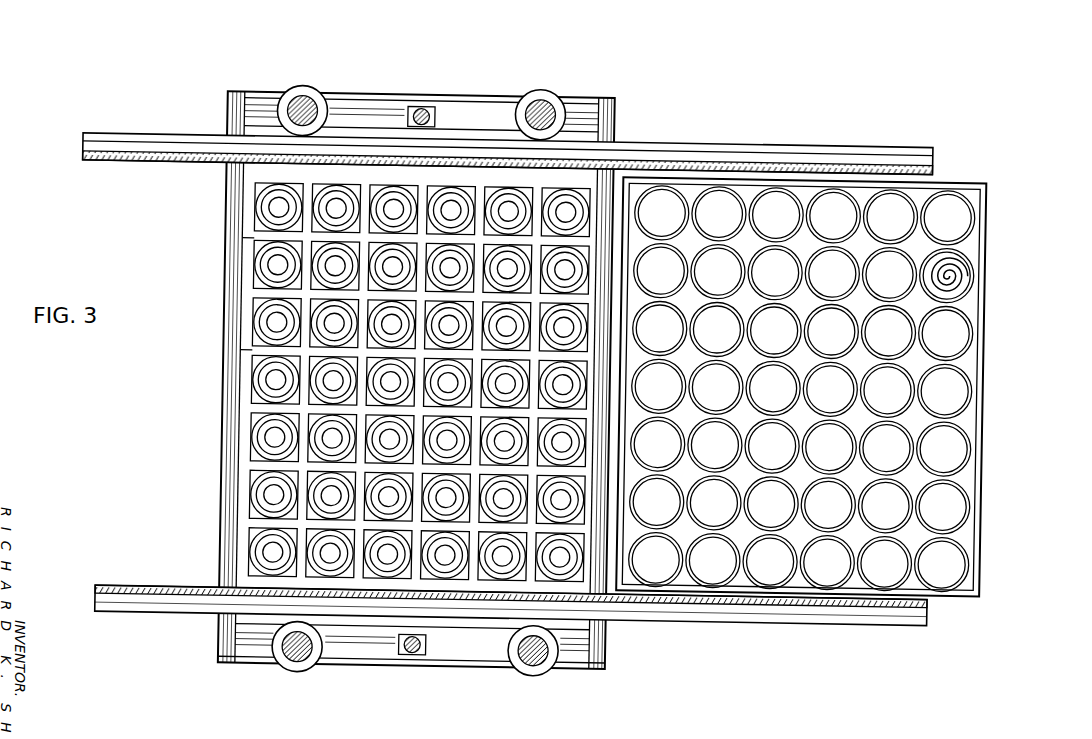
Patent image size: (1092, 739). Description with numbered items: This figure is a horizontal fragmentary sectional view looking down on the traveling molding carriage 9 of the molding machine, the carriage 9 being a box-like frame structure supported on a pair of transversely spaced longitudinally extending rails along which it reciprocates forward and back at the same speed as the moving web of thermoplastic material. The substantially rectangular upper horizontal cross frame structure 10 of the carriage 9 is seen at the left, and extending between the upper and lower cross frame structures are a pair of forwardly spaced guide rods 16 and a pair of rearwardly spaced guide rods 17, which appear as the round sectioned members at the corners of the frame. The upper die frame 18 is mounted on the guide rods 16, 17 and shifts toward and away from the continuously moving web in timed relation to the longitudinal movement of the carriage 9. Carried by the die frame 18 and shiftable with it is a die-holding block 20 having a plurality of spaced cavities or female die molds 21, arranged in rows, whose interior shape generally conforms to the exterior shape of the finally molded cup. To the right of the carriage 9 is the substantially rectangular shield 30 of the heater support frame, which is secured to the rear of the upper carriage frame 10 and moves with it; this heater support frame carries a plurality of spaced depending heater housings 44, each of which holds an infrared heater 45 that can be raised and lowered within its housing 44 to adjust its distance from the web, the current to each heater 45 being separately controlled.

The traveling molding carriage 9 is at (393, 394).
The upper horizontal cross frame structure 10 is at (450, 669).
The forwardly spaced guide rods 16 is at (305, 104).
The rearwardly spaced guide rods 17 is at (525, 104).
The upper die frame 18 is at (380, 381).
The die-holding block 20 is at (247, 355).
The female die molds 21 is at (276, 385).
The shield 30 is at (825, 387).
The heater housings 44 is at (974, 215).
The heater 45 is at (956, 271).